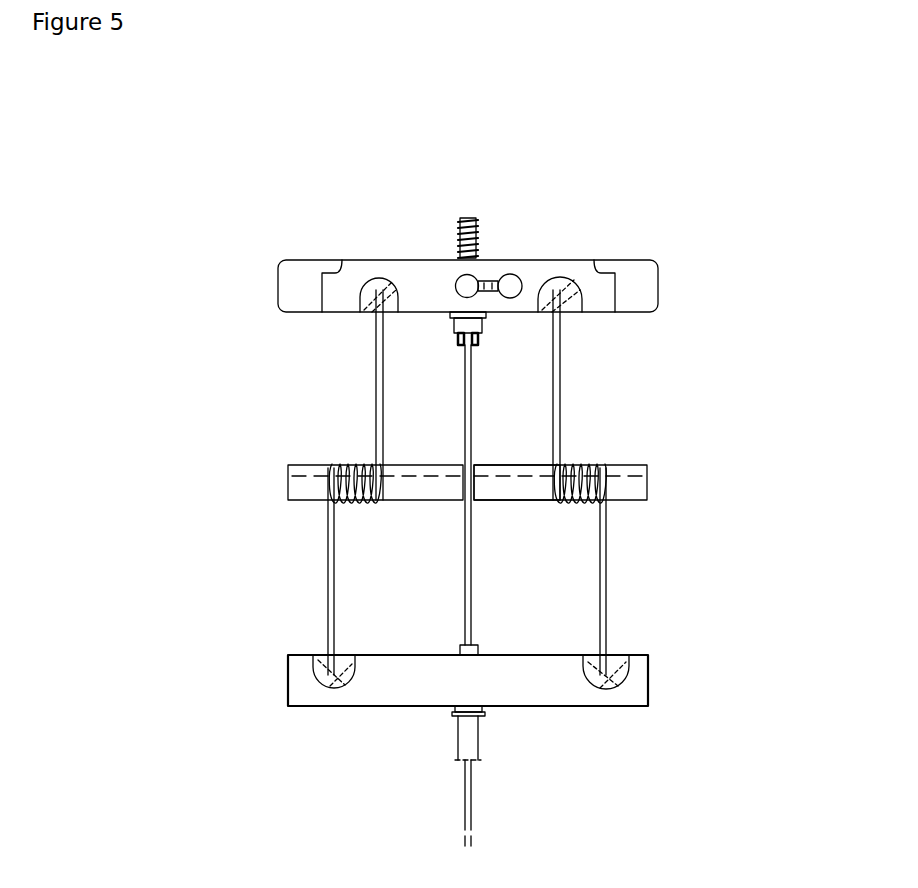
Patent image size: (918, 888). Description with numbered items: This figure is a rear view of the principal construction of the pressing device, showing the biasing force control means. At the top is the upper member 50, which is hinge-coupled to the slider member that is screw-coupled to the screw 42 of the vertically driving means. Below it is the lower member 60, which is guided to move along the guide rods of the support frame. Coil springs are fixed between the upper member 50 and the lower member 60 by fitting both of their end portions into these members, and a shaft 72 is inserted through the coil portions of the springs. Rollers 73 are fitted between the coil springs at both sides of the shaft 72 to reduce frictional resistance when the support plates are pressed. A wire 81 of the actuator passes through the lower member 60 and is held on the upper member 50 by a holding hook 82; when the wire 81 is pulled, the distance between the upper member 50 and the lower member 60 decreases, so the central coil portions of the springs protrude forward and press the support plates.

The screw 42 is at (455, 232).
The upper member 50 is at (545, 270).
The lower member 60 is at (360, 697).
The shaft 72 is at (636, 478).
The rollers 73 is at (496, 466).
The wire 81 is at (467, 605).
The holding hook 82 is at (480, 275).